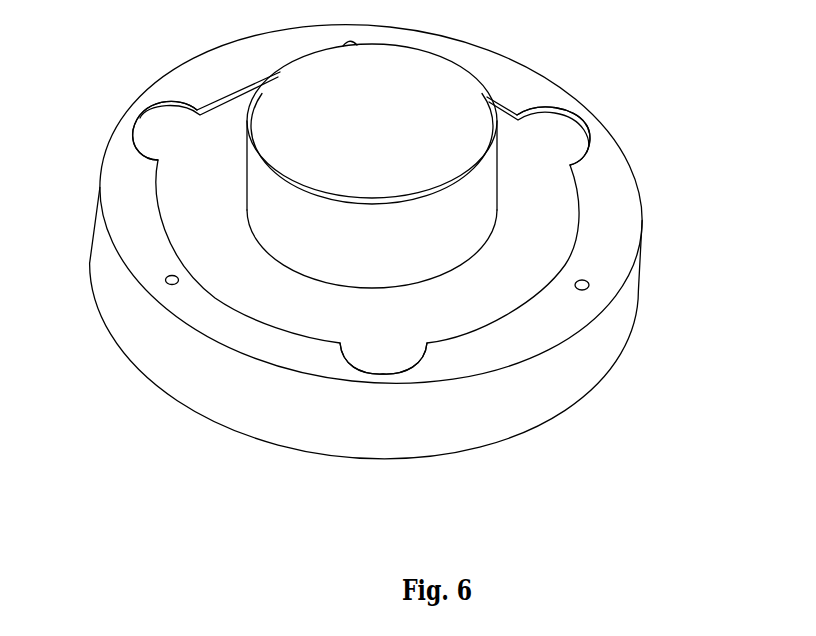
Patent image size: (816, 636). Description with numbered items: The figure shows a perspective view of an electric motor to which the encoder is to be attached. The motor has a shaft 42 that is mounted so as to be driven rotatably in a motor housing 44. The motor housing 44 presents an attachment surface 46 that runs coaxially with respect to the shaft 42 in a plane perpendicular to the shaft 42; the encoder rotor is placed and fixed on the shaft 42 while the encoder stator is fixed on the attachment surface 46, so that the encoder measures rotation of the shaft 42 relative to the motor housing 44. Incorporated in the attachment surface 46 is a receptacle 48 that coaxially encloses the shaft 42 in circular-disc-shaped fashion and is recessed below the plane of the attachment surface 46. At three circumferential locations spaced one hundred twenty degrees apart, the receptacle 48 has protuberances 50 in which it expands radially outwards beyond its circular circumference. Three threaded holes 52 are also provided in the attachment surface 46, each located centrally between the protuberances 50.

The shaft 42 is at (431, 91).
The motor housing 44 is at (192, 417).
The attachment surface 46 is at (622, 234).
The receptacle 48 is at (558, 210).
The protuberances 50 is at (149, 109).
The threaded holes 52 is at (168, 285).